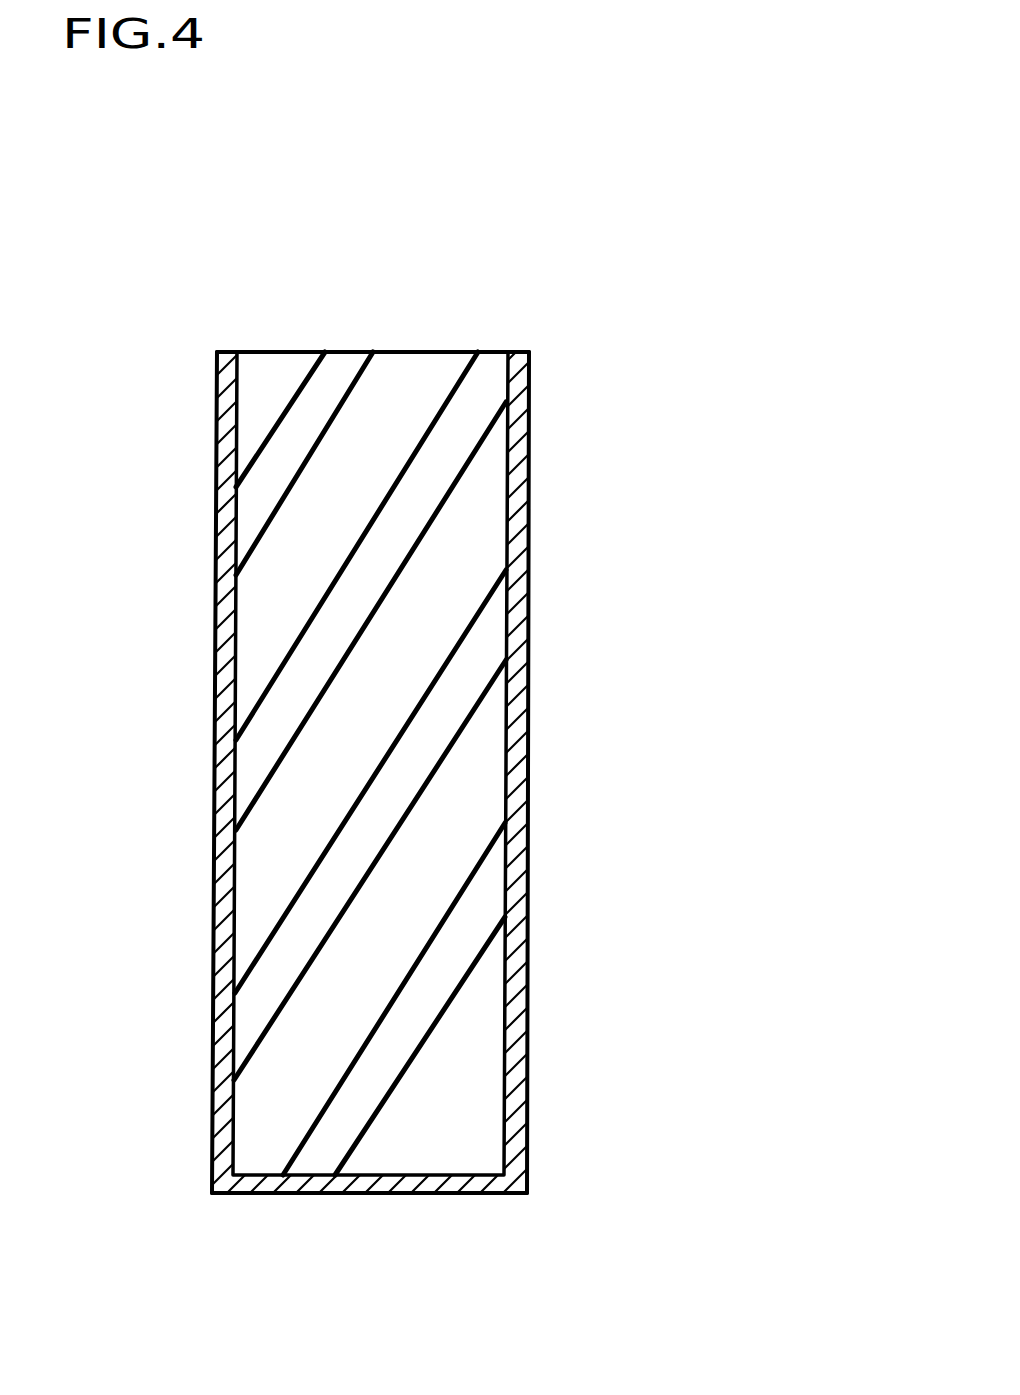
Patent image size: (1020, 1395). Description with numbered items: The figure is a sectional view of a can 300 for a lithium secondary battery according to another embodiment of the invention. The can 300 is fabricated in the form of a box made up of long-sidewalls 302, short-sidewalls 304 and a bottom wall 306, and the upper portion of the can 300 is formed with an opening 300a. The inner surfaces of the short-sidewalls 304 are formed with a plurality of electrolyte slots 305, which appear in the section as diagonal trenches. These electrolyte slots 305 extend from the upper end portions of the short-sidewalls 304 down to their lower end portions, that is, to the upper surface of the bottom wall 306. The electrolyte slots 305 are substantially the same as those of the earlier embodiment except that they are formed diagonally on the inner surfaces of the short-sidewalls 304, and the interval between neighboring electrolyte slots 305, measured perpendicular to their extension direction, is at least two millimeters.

The can 300 is at (510, 758).
The opening 300a is at (257, 350).
The long-sidewalls 302 is at (518, 500).
The short-sidewalls 304 is at (443, 365).
The electrolyte slots 305 is at (332, 365).
The bottom wall 306 is at (358, 1195).